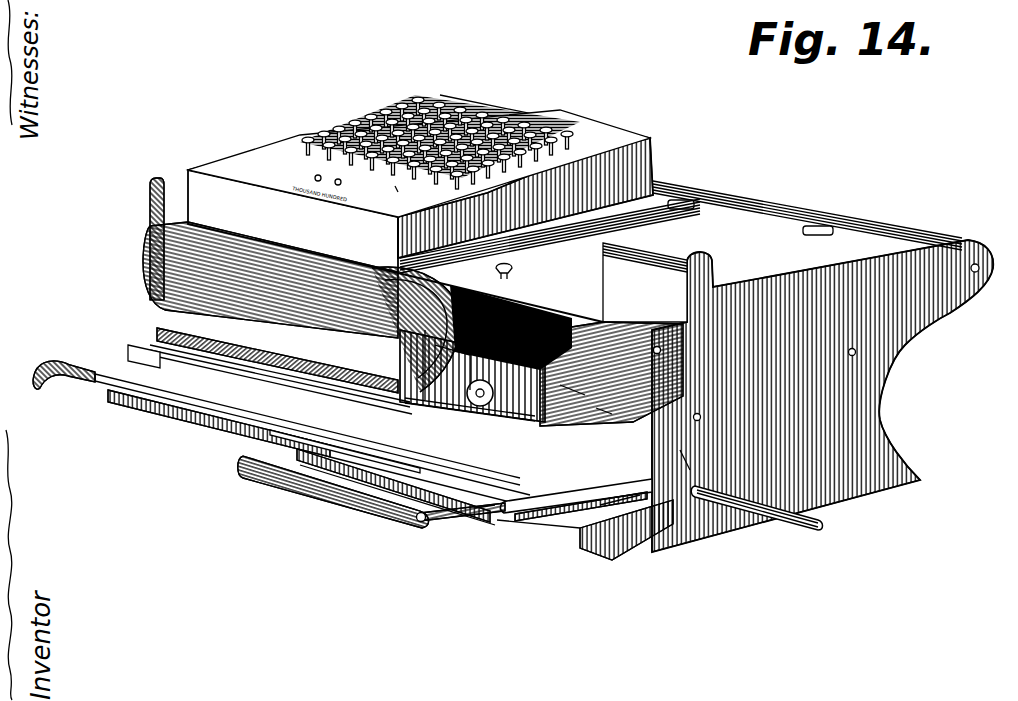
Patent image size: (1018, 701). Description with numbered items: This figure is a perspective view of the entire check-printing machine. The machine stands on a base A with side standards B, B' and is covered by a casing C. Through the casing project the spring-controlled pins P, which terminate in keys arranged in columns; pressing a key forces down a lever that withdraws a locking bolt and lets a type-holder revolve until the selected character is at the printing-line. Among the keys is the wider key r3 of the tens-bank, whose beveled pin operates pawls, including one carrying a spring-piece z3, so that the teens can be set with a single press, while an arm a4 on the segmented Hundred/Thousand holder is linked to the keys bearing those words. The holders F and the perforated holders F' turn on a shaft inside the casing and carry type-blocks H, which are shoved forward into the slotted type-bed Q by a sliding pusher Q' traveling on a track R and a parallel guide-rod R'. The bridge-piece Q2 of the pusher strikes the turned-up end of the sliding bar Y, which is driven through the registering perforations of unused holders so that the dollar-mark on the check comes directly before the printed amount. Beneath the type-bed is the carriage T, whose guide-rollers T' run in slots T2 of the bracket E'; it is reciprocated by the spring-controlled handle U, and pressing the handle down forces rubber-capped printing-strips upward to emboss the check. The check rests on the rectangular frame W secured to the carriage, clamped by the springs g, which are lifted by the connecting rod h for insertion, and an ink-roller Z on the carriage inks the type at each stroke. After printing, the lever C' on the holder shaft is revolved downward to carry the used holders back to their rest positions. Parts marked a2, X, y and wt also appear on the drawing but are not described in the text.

The spring-controlled pins P is at (372, 118).
The arm a4 is at (314, 176).
The key r3 is at (396, 188).
The casing C is at (420, 184).
The lever C' is at (138, 239).
The type-blocks H is at (440, 290).
The drum end a2 is at (416, 329).
The side standard B is at (696, 366).
The side standard B' is at (611, 374).
The type wheel X is at (572, 384).
The sliding pusher Q' is at (602, 405).
The spring-piece z3 is at (650, 380).
The lever y is at (686, 460).
The holders F is at (389, 368).
The sliding bar Y is at (315, 368).
The holders F' is at (281, 375).
The type-bed Q is at (139, 340).
The bridge-piece Q2 is at (95, 364).
The track R is at (307, 429).
The guide-rod R' is at (319, 448).
The springs g is at (280, 430).
The rectangular frame W is at (296, 492).
The rod h is at (340, 500).
The spring-controlled handle U is at (380, 512).
The bracket E' is at (576, 530).
The carriage T is at (461, 534).
The guide-rollers T' is at (536, 546).
The slots T2 is at (545, 520).
The base A is at (645, 548).
The weight wt is at (620, 512).
The ink-roller Z is at (731, 531).